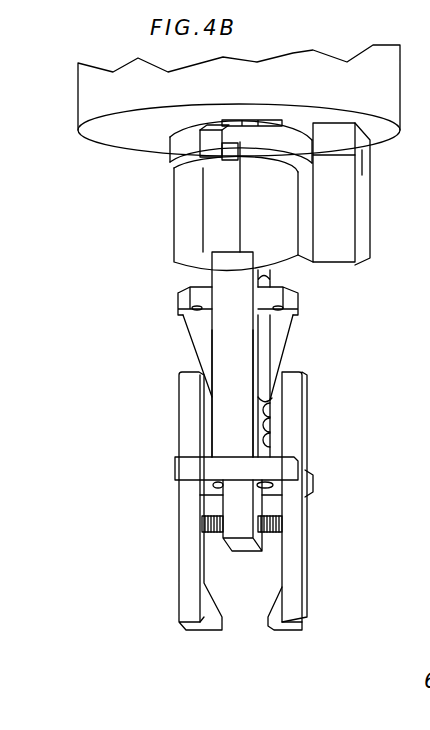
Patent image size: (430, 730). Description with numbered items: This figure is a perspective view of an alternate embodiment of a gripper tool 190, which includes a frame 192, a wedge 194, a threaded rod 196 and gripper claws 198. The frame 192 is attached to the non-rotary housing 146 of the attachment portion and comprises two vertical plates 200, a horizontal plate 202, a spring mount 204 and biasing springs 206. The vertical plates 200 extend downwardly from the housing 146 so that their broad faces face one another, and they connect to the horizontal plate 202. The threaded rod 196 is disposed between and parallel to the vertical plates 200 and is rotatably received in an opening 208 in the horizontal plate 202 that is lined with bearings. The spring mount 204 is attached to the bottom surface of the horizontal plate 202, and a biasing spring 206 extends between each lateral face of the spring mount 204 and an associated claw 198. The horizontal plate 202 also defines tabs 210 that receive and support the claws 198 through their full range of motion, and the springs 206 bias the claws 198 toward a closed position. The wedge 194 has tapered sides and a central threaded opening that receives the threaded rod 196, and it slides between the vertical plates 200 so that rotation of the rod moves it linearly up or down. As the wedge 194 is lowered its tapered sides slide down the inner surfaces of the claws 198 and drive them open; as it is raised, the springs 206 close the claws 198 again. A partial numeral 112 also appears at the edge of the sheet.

The non-rotary housing 146 is at (180, 224).
The frame 192 is at (210, 275).
The gripper tool 190 is at (137, 325).
The wedge 194 is at (290, 333).
The vertical plates 200 is at (230, 357).
The threaded rod 196 is at (278, 415).
The horizontal plate 202 is at (188, 467).
The tabs 210 is at (165, 477).
The gripper claws 198 is at (180, 520).
The spring mount 204 is at (244, 548).
The opening 208 is at (267, 488).
The biasing springs 206 is at (210, 533).
The plate 112 is at (429, 729).